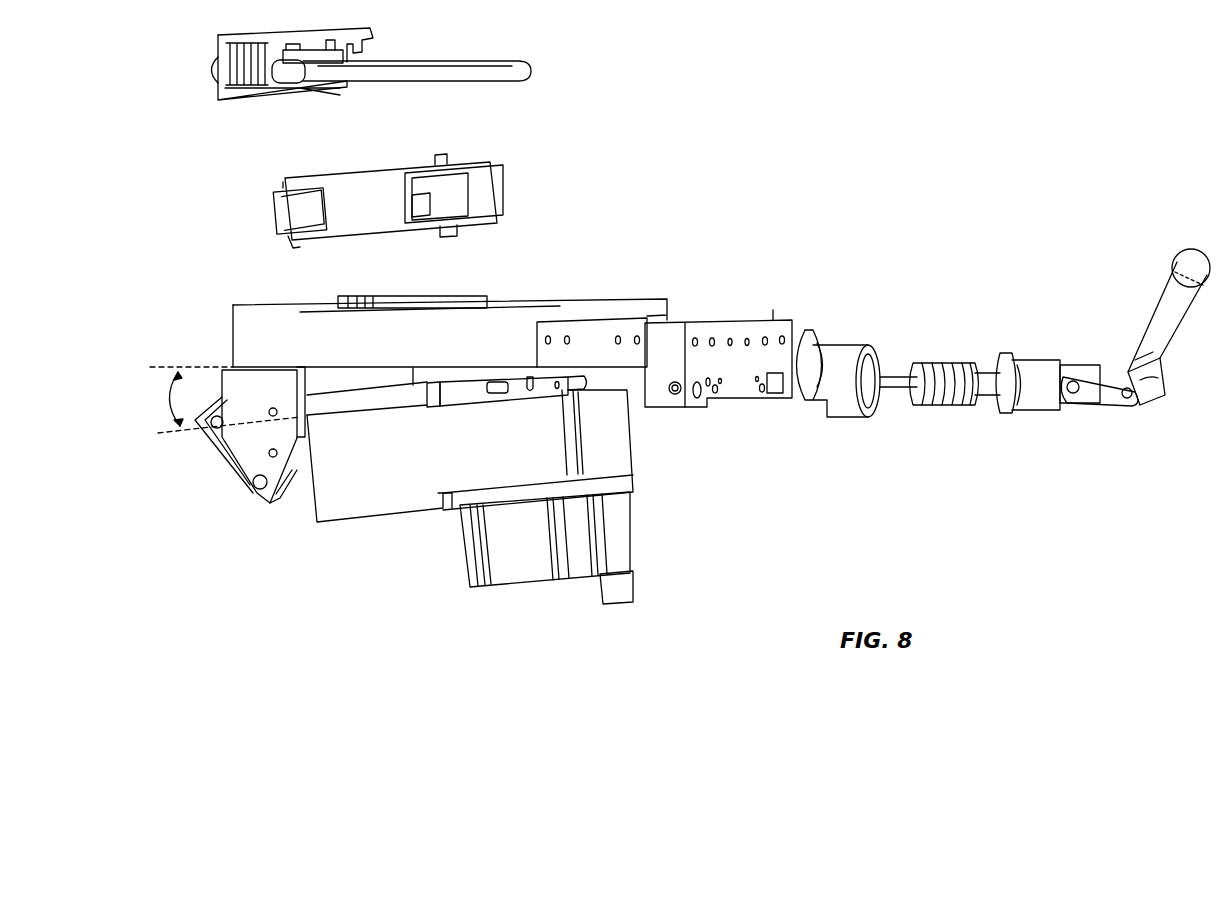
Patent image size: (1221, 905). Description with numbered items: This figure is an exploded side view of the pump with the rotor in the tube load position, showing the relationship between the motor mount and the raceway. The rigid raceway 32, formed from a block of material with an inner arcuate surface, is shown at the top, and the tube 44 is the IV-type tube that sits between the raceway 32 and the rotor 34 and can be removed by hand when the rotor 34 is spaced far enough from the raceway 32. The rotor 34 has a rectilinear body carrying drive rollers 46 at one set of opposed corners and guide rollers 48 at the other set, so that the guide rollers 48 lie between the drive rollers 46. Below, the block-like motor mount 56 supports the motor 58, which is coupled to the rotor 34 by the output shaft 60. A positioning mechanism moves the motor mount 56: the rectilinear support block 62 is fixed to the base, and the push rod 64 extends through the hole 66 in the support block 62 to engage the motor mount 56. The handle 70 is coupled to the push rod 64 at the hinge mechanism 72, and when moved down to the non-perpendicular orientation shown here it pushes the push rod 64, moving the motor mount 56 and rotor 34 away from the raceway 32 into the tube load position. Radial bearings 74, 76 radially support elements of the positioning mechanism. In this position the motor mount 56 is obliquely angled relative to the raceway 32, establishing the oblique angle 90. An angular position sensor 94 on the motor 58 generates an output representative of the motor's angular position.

The raceway 32 is at (617, 300).
The rotor 34 is at (352, 177).
The tube 44 is at (521, 56).
The drive rollers 46 is at (278, 214).
The guide rollers 48 is at (420, 202).
The motor mount 56 is at (622, 452).
The motor 58 is at (617, 528).
The output shaft 60 is at (413, 372).
The support block 62 is at (773, 320).
The push rod 64 is at (893, 380).
The hole 66 is at (673, 394).
The handle 70 is at (1160, 295).
The hinge mechanism 72 is at (1097, 393).
The radial bearing 74 is at (978, 363).
The radial bearing 76 is at (848, 413).
The oblique angle 90 is at (175, 398).
The angular position sensor 94 is at (622, 585).